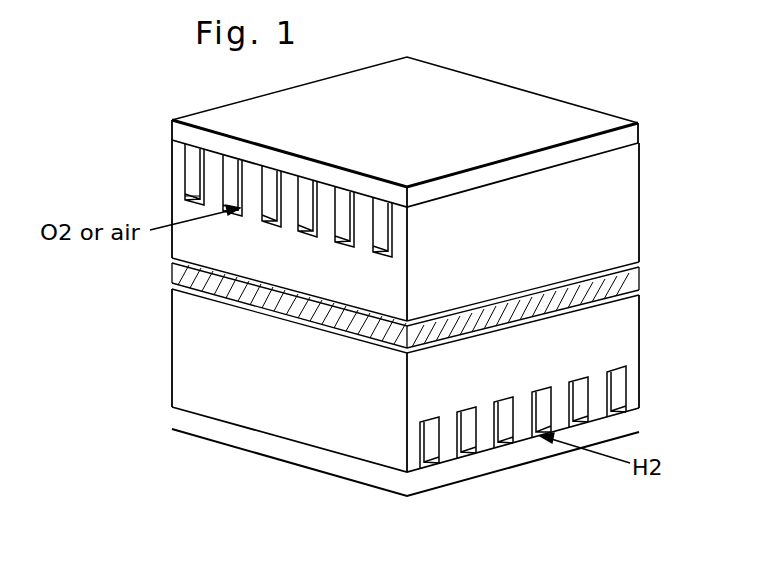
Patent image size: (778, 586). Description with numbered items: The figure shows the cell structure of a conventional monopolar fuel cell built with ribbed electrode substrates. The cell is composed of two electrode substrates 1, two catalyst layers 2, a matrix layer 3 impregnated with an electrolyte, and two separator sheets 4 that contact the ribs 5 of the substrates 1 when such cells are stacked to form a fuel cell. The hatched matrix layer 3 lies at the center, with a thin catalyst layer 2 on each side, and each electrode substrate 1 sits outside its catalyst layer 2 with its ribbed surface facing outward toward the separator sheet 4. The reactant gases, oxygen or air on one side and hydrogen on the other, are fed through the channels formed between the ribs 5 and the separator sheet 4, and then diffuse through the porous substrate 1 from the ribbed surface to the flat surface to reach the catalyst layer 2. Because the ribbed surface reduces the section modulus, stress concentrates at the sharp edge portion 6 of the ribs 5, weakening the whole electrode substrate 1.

The electrode substrate 1 is at (623, 192).
The catalyst layer 2 is at (631, 264).
The matrix layer 3 is at (634, 278).
The separator sheet 4 is at (623, 140).
The rib 5 is at (257, 193).
The sharp edge portion 6 is at (186, 198).